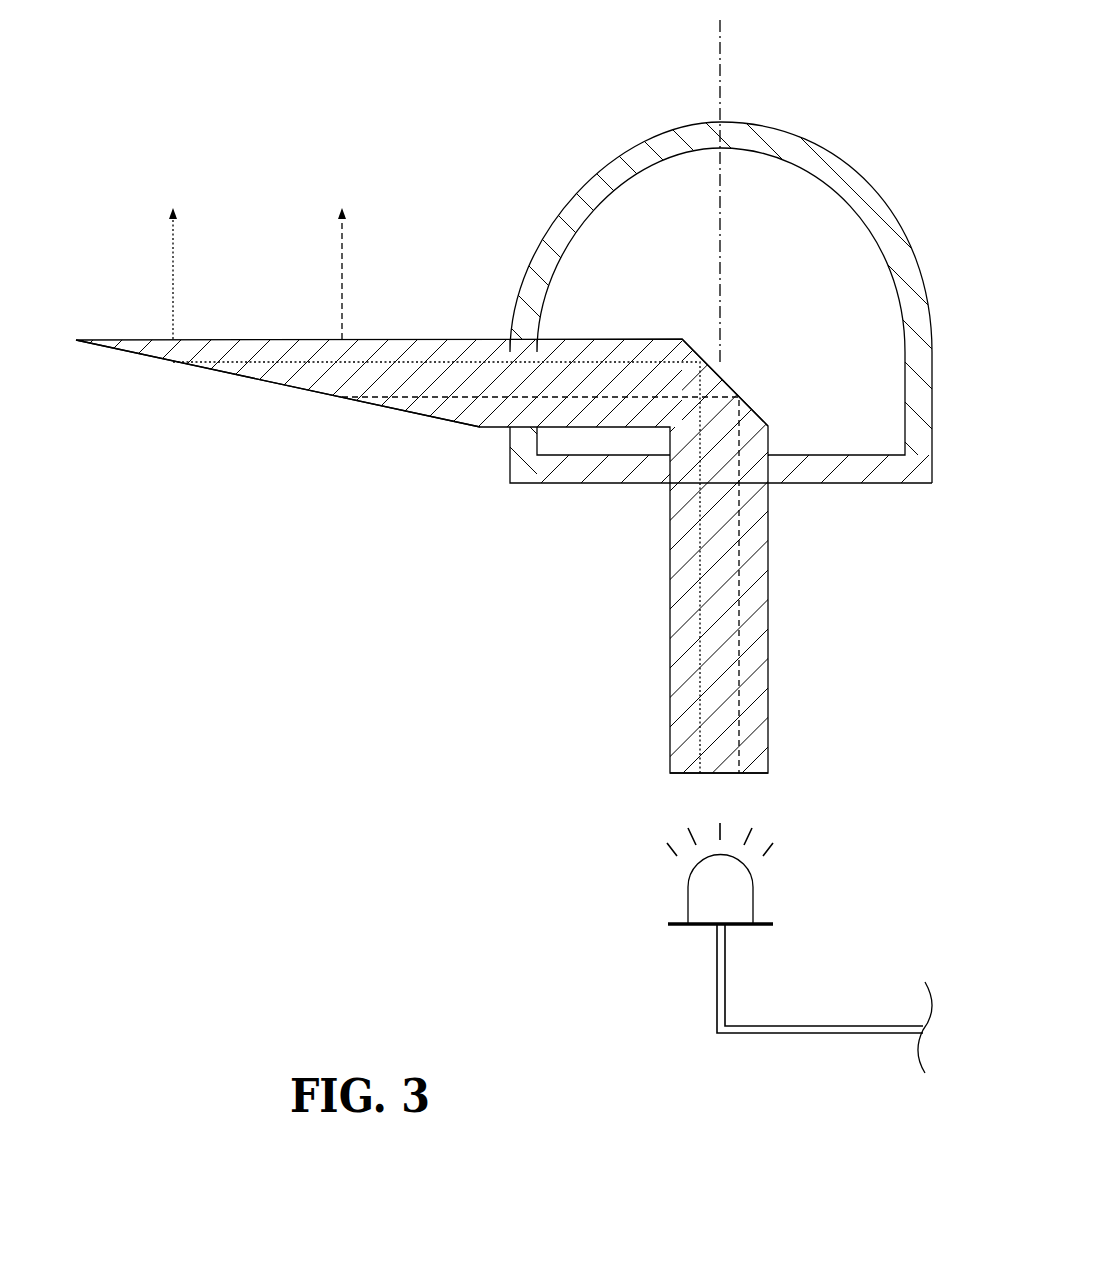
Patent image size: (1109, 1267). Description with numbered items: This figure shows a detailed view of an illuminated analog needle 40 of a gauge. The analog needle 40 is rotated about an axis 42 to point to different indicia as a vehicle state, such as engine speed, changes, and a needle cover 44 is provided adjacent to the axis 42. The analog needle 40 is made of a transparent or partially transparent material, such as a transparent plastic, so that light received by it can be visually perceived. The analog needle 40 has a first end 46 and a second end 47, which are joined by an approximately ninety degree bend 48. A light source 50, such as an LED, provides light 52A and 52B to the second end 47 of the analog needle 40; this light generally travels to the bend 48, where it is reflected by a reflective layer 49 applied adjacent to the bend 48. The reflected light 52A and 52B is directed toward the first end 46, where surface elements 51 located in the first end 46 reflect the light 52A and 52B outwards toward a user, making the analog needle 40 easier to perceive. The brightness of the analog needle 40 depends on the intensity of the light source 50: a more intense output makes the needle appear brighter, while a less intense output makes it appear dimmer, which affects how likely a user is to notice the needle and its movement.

The analog needle 40 is at (427, 350).
The axis 42 is at (720, 78).
The needle cover 44 is at (865, 182).
The first end 46 is at (127, 350).
The second end 47 is at (770, 757).
The bend 48 is at (700, 363).
The reflective layer 49 is at (740, 397).
The light source 50 is at (700, 890).
The surface elements 51 is at (293, 387).
The light 52A is at (170, 310).
The light 52B is at (343, 267).